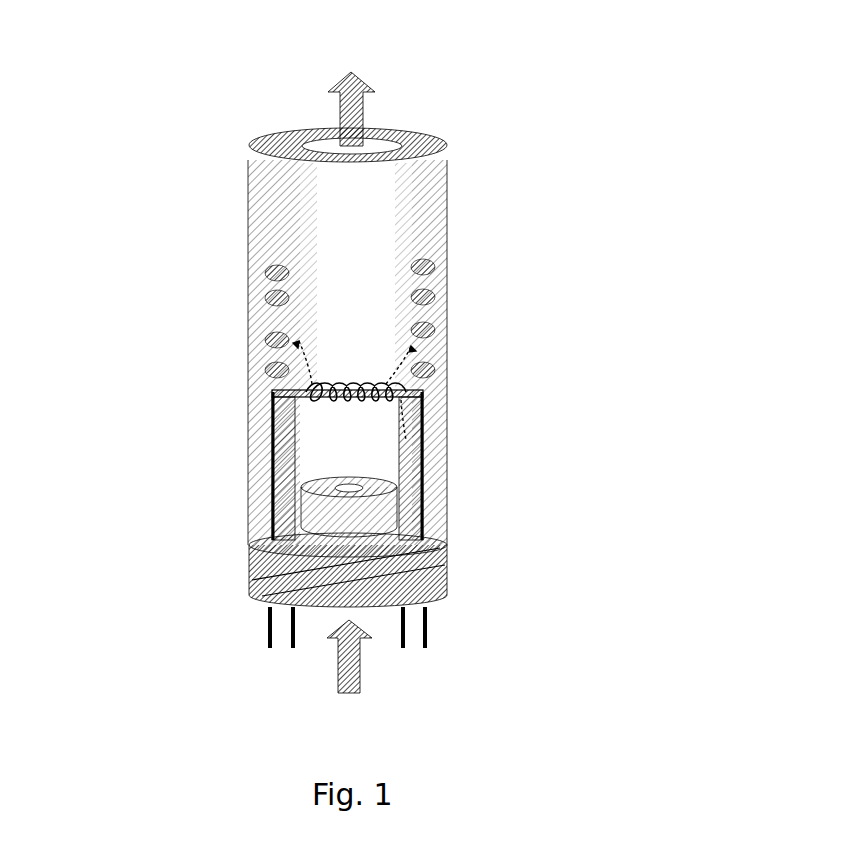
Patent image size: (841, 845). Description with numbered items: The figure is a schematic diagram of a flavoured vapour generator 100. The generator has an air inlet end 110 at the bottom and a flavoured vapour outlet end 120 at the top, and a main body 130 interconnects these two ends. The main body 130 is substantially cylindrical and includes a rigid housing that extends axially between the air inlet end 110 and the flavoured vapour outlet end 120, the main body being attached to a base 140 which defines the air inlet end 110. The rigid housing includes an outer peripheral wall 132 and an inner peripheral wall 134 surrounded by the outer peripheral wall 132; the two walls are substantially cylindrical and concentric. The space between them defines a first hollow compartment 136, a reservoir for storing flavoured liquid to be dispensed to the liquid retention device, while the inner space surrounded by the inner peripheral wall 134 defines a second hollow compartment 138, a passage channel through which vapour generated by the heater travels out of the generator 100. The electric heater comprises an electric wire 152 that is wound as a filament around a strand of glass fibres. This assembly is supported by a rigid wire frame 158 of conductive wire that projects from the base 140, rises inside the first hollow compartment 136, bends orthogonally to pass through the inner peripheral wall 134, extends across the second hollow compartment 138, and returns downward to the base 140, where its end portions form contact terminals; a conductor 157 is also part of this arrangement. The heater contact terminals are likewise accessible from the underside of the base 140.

The flavoured vapour generator 100 is at (373, 386).
The air inlet end 110 is at (349, 701).
The flavoured vapour outlet end 120 is at (357, 62).
The main body 130 is at (333, 336).
The outer peripheral wall 132 is at (247, 323).
The inner peripheral wall 134 is at (300, 200).
The first hollow compartment 136 is at (428, 224).
The second hollow compartment 138 is at (356, 274).
The base 140 is at (435, 577).
The electric wire 152 is at (357, 406).
The conductor 157 is at (420, 507).
The rigid wire frame 158 is at (427, 389).